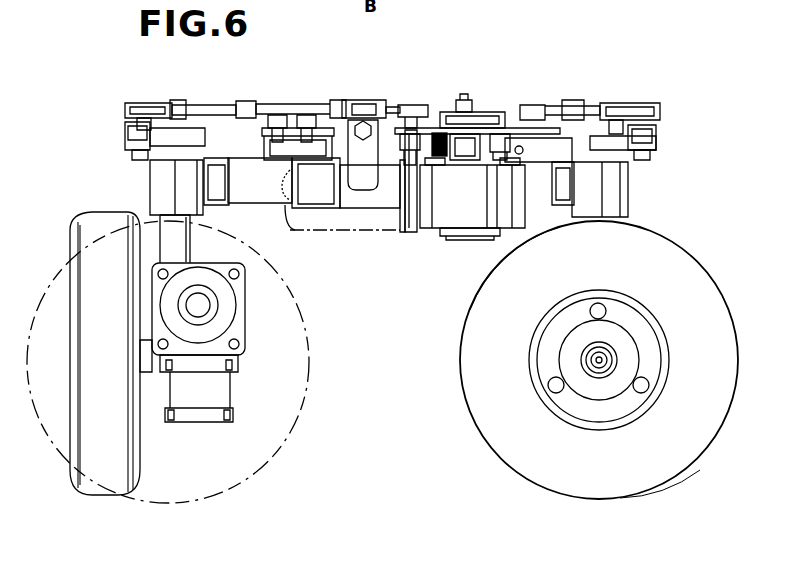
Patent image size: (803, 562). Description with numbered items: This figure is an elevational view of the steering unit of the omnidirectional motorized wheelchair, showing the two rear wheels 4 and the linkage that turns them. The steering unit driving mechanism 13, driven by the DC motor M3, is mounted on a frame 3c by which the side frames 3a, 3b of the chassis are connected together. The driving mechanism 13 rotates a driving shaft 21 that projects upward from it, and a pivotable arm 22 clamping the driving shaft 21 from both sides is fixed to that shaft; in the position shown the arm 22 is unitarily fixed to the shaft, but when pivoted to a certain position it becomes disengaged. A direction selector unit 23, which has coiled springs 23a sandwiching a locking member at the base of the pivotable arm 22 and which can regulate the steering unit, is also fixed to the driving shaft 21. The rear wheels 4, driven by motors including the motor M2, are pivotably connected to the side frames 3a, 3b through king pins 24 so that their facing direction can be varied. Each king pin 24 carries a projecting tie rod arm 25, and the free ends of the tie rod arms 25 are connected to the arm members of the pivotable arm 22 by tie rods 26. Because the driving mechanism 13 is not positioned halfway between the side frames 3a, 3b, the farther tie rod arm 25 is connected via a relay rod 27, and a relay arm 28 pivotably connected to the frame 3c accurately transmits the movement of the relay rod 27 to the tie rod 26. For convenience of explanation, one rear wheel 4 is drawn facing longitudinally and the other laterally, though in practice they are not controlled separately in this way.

The rear wheels 4 is at (105, 222).
The motor M2 is at (230, 322).
The DC motor M3 is at (380, 225).
The side frame 3a is at (562, 172).
The side frame 3b is at (218, 185).
The frame 3c is at (275, 200).
The steering unit driving mechanism 13 is at (448, 232).
The driving shaft 21 is at (466, 100).
The pivotable arm 22 is at (452, 112).
The direction selector unit 23 is at (462, 215).
The coiled springs 23a is at (436, 135).
The king pins 24 is at (168, 112).
The tie rod arm 25 is at (125, 131).
The tie rods 26 is at (198, 106).
The relay rod 27 is at (356, 104).
The relay arm 28 is at (320, 135).